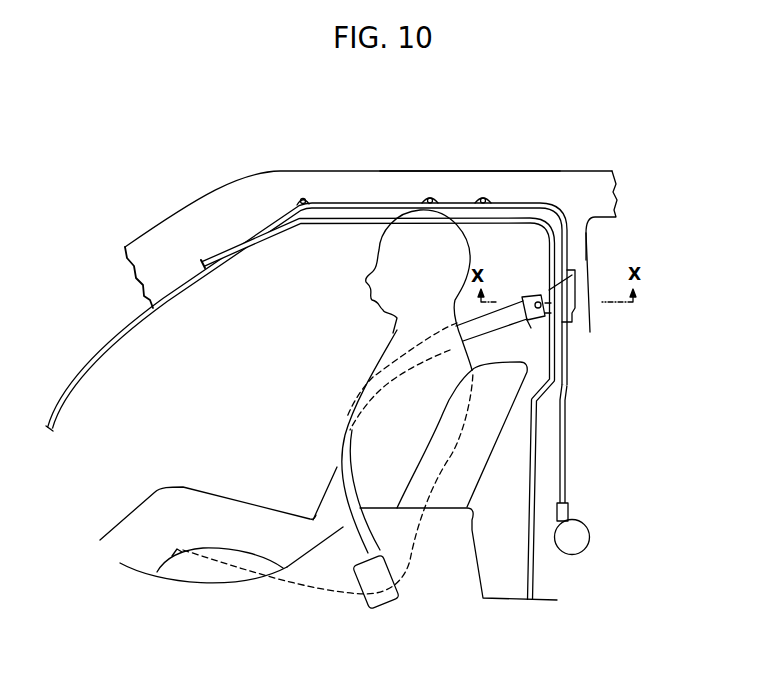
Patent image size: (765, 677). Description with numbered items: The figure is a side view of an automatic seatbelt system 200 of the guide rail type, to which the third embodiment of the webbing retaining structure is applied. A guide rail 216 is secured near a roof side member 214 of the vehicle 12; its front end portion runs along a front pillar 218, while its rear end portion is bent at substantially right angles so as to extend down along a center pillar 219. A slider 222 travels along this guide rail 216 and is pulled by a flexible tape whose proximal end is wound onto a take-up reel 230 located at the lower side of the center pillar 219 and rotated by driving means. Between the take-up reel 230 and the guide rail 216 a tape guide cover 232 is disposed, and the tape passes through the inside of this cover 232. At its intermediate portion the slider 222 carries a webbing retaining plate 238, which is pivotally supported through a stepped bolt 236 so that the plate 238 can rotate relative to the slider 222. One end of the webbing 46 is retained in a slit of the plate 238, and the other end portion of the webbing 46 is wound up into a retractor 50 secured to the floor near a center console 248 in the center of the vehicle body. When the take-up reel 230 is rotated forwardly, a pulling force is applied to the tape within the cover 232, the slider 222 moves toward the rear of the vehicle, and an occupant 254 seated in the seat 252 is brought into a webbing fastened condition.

The vehicle 12 is at (427, 166).
The webbing 46 is at (512, 305).
The retractor 50 is at (388, 607).
The automatic seatbelt system 200 is at (563, 196).
The roof side member 214 is at (501, 170).
The guide rail 216 is at (360, 200).
The front pillar 218 is at (158, 238).
The center pillar 219 is at (583, 238).
The slider 222 is at (550, 292).
The take-up reel 230 is at (584, 521).
The tape guide cover 232 is at (567, 453).
The stepped bolt 236 is at (542, 322).
The webbing retaining plate 238 is at (540, 322).
The center console 248 is at (462, 537).
The seat 252 is at (447, 413).
The occupant 254 is at (253, 503).